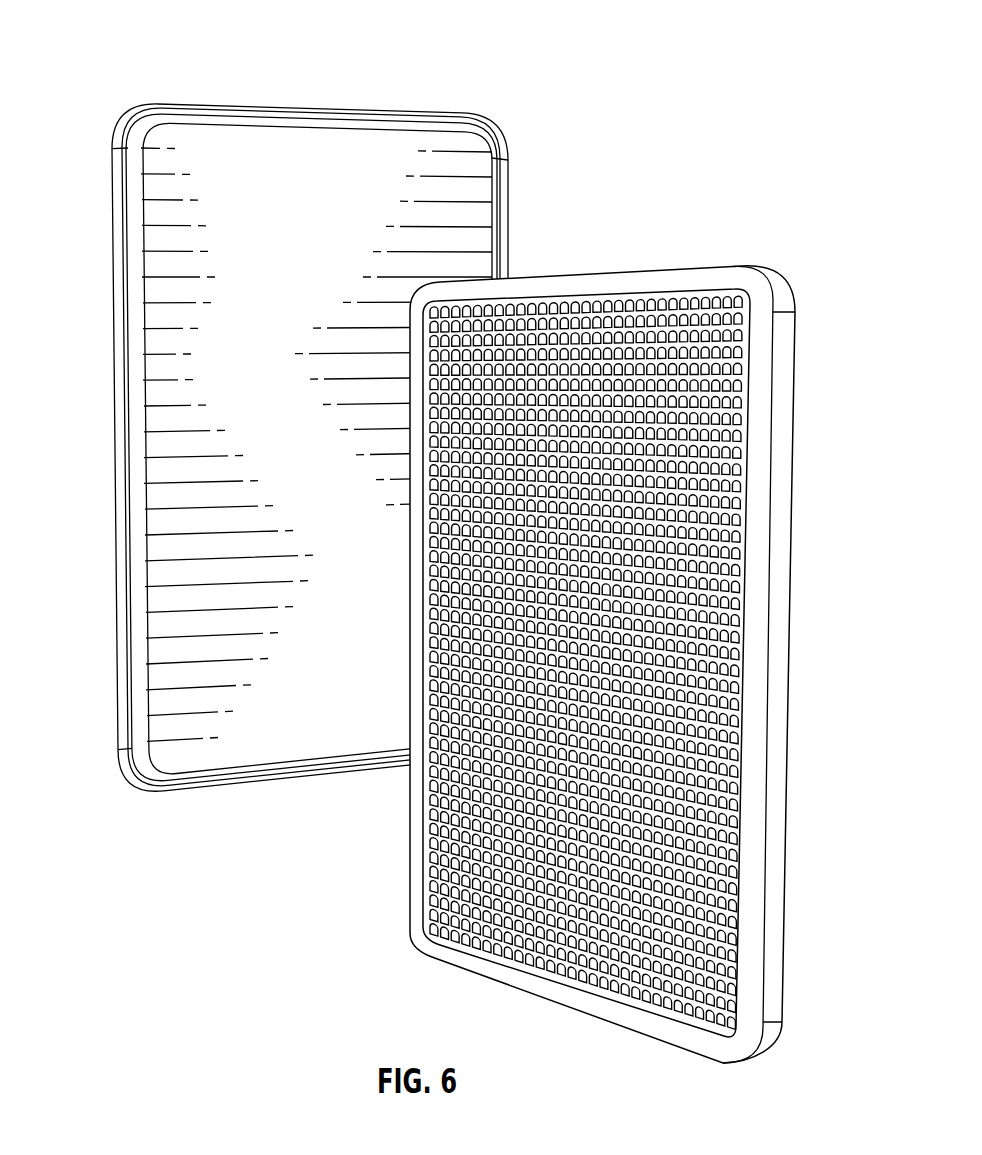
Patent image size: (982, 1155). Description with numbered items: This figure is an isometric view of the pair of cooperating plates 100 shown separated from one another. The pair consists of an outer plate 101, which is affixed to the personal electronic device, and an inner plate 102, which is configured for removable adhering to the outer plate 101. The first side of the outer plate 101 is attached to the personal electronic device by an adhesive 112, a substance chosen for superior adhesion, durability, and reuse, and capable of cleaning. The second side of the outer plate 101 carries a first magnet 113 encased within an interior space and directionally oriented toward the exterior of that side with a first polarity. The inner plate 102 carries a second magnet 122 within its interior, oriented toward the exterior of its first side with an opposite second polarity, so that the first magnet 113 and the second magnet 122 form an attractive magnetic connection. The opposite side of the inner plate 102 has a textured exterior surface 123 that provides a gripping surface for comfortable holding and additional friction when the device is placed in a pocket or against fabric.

The pair of cooperating plates 100 is at (461, 536).
The outer plate 101 is at (92, 40).
The inner plate 102 is at (659, 639).
The adhesive 112 is at (200, 789).
The first magnet 113 is at (418, 168).
The second magnet 122 is at (786, 982).
The textured exterior surface 123 is at (640, 560).